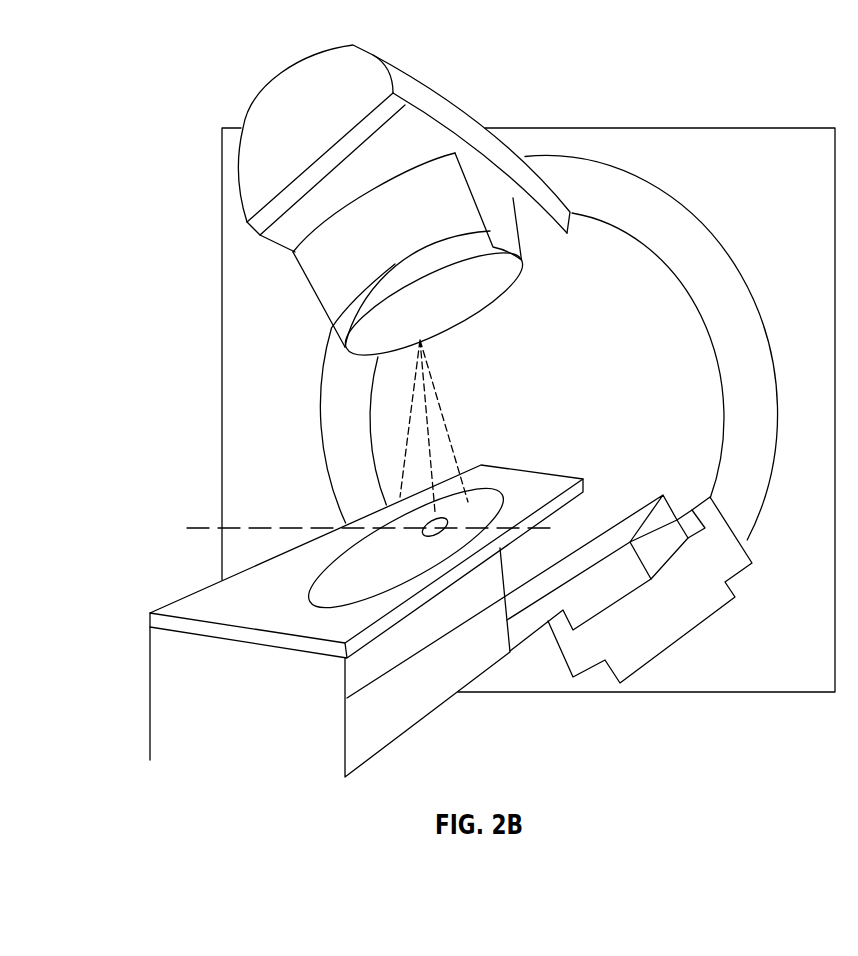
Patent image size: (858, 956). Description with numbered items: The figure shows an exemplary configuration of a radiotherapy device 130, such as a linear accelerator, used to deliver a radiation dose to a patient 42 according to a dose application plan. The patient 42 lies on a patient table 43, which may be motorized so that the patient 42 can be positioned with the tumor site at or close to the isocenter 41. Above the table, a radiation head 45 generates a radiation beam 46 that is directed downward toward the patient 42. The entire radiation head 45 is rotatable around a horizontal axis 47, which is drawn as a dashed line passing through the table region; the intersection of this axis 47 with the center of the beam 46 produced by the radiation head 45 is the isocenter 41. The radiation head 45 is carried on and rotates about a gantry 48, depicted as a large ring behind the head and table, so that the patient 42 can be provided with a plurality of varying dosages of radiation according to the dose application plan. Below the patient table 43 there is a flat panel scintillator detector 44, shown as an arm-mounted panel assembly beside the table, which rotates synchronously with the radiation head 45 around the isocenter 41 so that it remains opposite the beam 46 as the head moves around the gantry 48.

The radiotherapy device 130 is at (688, 86).
The gantry 48 is at (704, 227).
The radiation head 45 is at (317, 300).
The radiation beam 46 is at (435, 427).
The patient table 43 is at (553, 486).
The flat panel scintillator detector 44 is at (628, 520).
The horizontal axis 47 is at (204, 527).
The patient 42 is at (347, 560).
The isocenter 41 is at (424, 530).